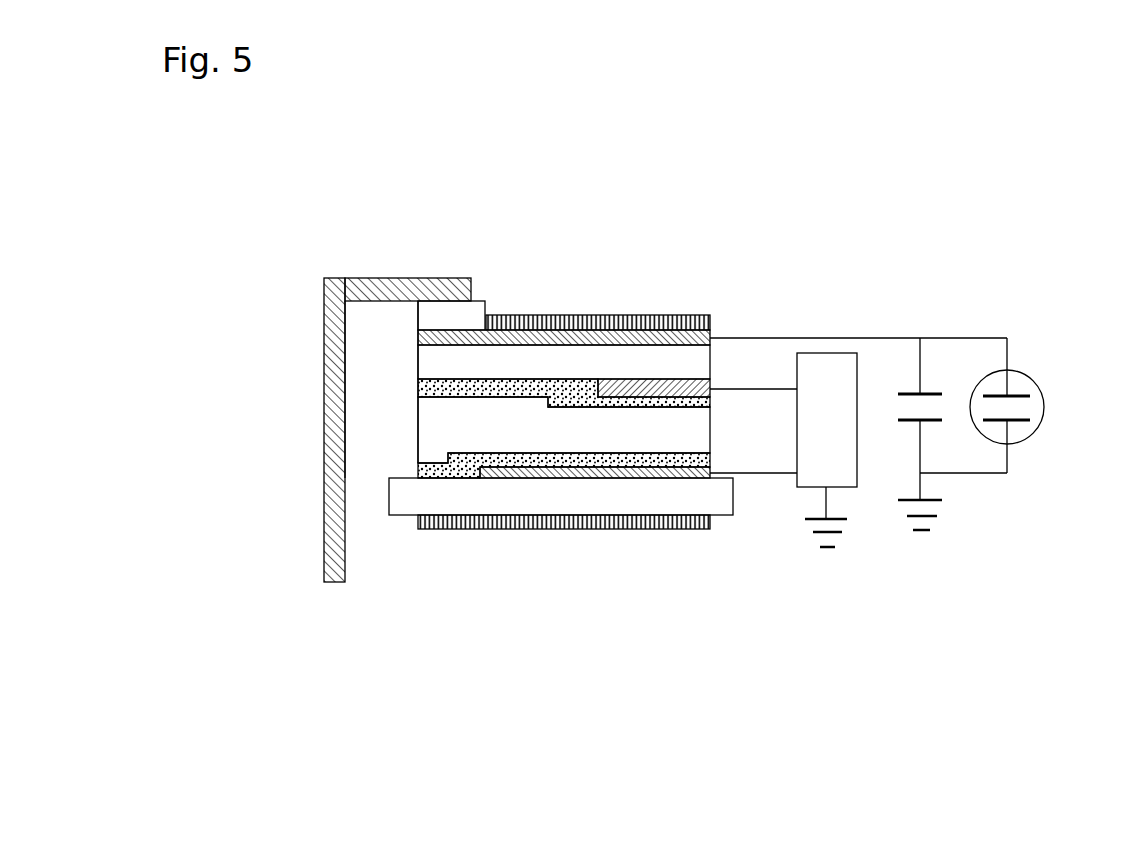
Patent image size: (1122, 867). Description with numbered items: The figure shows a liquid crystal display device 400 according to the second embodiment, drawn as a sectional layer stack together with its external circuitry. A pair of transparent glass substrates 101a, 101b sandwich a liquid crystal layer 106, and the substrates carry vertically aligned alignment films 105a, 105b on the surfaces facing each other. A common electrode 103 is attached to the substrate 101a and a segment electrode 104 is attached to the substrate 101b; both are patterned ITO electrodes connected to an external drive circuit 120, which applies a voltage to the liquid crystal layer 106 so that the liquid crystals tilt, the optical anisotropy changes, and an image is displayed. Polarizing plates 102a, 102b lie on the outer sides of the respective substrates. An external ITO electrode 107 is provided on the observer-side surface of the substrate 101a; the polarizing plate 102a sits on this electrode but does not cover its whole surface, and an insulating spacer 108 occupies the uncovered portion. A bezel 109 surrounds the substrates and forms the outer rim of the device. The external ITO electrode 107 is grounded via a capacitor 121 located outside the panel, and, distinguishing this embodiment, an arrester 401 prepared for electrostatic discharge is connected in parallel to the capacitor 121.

The transparent glass substrate 101a is at (575, 365).
The transparent glass substrate 101b is at (587, 495).
The polarizing plate 102a is at (530, 315).
The polarizing plate 102b is at (663, 530).
The common electrode 103 is at (693, 380).
The segment electrode 104 is at (532, 480).
The alignment film 105a is at (662, 382).
The alignment film 105b is at (462, 472).
The liquid crystal layer 106 is at (439, 422).
The external ITO electrode 107 is at (643, 331).
The insulating spacer 108 is at (481, 301).
The bezel 109 is at (362, 278).
The external drive circuit 120 is at (848, 468).
The capacitor 121 is at (932, 388).
The liquid crystal display device 400 is at (845, 198).
The arrester 401 is at (1023, 368).